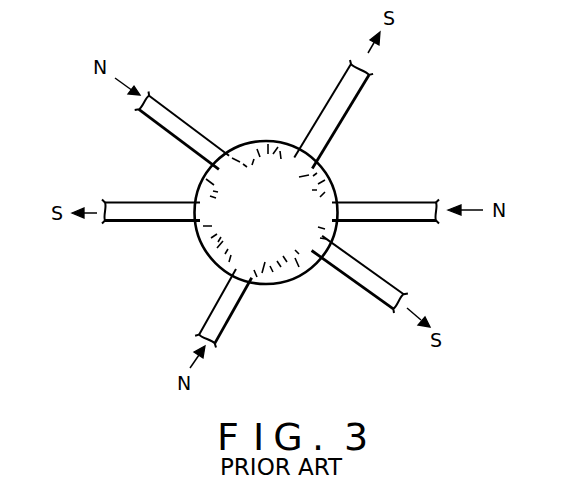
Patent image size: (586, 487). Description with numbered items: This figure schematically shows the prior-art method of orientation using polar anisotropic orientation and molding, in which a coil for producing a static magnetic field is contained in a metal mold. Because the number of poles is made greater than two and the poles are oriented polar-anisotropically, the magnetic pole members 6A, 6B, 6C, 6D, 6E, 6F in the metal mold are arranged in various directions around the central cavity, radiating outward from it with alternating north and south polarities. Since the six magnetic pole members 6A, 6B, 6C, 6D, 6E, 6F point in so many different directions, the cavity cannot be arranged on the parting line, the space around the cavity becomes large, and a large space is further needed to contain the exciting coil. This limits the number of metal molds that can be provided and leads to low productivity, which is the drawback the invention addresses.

The magnetic pole member 6A is at (177, 126).
The magnetic pole member 6B is at (153, 208).
The magnetic pole member 6C is at (213, 313).
The magnetic pole member 6D is at (367, 280).
The magnetic pole member 6E is at (413, 208).
The magnetic pole member 6F is at (340, 105).